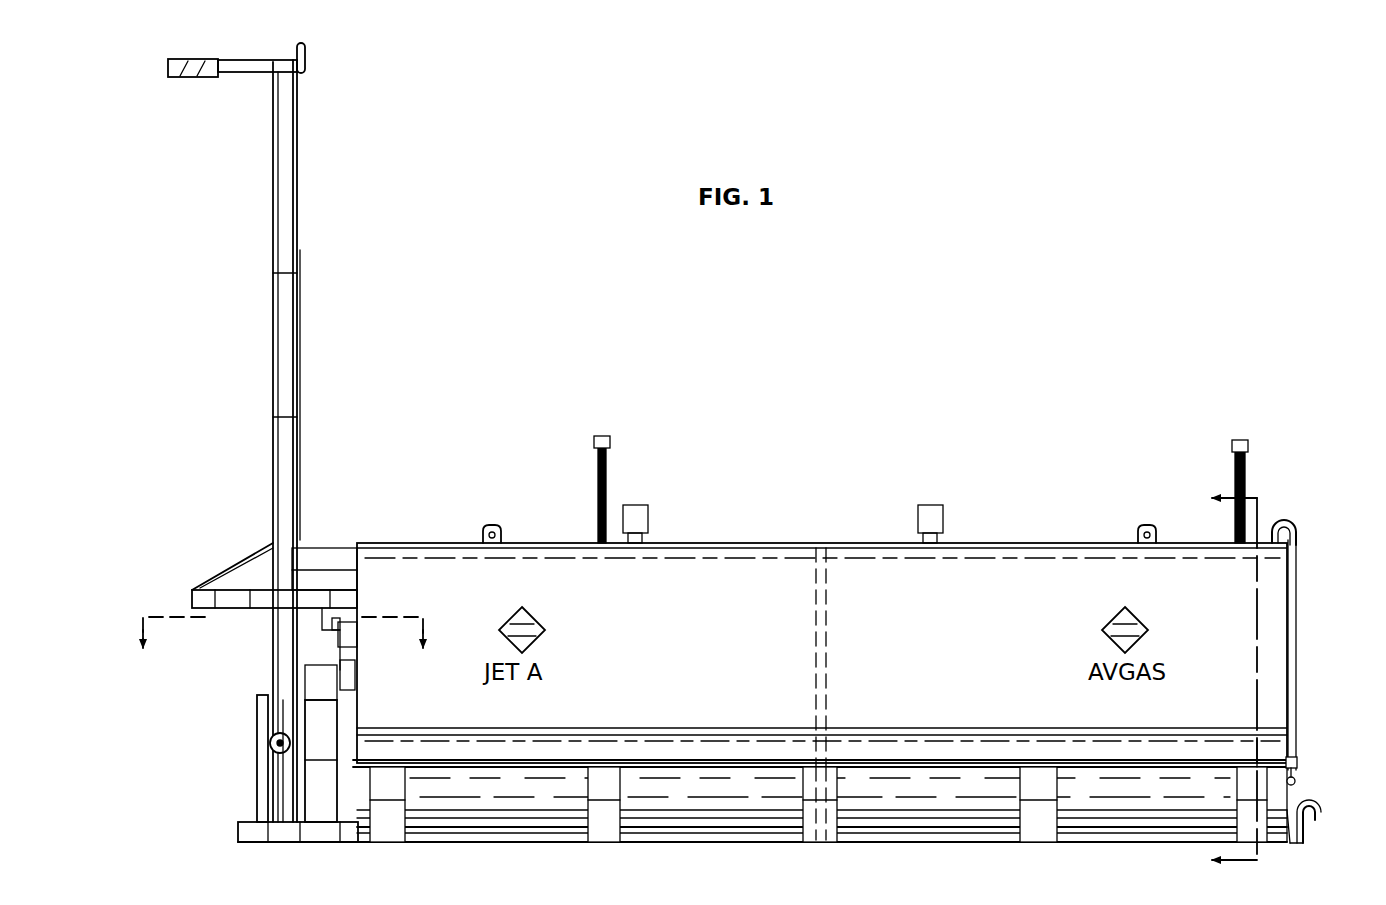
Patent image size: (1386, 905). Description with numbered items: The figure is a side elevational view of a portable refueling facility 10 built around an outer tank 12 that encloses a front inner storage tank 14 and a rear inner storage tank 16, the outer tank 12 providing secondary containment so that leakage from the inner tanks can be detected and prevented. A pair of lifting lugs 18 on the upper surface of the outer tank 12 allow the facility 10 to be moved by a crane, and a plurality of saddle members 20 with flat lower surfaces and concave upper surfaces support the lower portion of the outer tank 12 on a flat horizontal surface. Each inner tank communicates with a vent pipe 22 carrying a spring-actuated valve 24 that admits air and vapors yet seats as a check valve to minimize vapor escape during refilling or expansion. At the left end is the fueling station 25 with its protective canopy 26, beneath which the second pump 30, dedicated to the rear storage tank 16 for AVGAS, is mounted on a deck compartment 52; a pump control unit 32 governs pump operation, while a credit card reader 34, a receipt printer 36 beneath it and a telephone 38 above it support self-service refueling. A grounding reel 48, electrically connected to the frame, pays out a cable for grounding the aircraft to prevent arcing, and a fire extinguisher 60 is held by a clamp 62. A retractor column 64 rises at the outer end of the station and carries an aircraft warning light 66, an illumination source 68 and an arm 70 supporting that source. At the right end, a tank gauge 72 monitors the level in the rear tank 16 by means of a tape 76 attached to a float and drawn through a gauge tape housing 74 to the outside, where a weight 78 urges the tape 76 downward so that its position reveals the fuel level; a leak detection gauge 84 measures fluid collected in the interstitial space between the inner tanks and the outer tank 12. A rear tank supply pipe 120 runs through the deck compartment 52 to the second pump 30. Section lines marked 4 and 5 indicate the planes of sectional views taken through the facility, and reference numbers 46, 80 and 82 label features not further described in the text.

The refueling facility 10 is at (875, 380).
The outer tank 12 is at (775, 543).
The front inner storage tank 14 is at (690, 580).
The rear inner storage tank 16 is at (1005, 585).
The lifting lugs 18 is at (488, 525).
The saddle members 20 is at (1060, 805).
The vent pipe 22 is at (598, 500).
The valve 24 is at (600, 438).
The fueling station 25 is at (215, 466).
The protective canopy 26 is at (240, 572).
The second pump 30 is at (257, 710).
The pump control unit 32 is at (273, 752).
The credit card reader 34 is at (305, 690).
The receipt printer 36 is at (305, 800).
The telephone 38 is at (330, 600).
The mast 46 is at (278, 183).
The grounding reel 48 is at (270, 740).
The deck compartment 52 is at (245, 822).
The fire extinguishers 60 is at (335, 650).
The clamps 62 is at (340, 690).
The retractor column 64 is at (297, 165).
The aircraft warning light 66 is at (305, 50).
The illumination source 68 is at (178, 77).
The arm 70 is at (248, 72).
The tank gauge 72 is at (1308, 532).
The gauge tape housing 74 is at (1290, 520).
The tape 76 is at (1298, 604).
The weight 78 is at (1296, 780).
The coupling 80 is at (1296, 762).
The fill line 82 is at (1210, 760).
The leak detection gauge 84 is at (1320, 832).
The rear tank supply pipe 120 is at (530, 835).
The section line 4- 4 is at (1216, 679).
The section line 5- 5 is at (281, 646).